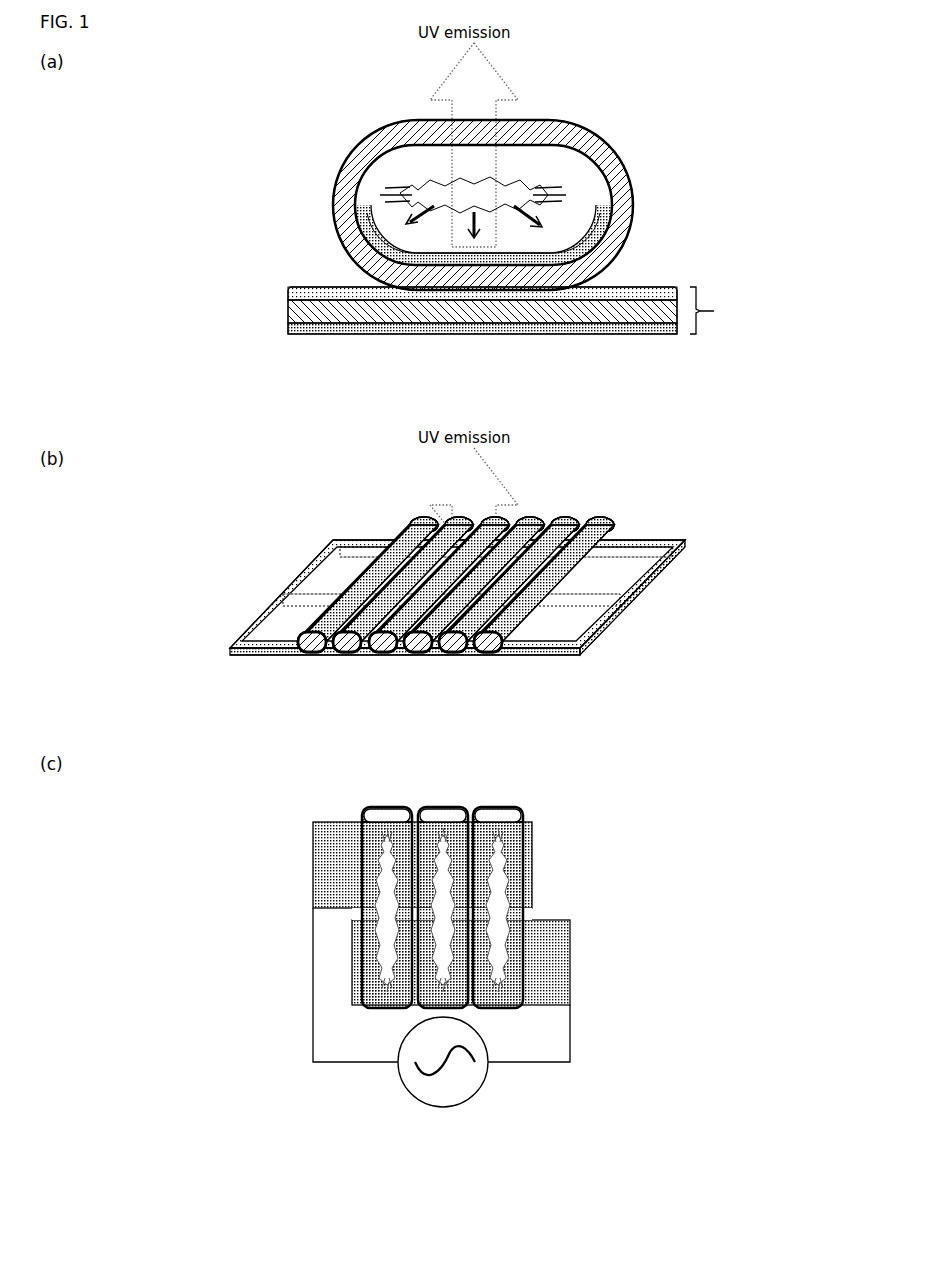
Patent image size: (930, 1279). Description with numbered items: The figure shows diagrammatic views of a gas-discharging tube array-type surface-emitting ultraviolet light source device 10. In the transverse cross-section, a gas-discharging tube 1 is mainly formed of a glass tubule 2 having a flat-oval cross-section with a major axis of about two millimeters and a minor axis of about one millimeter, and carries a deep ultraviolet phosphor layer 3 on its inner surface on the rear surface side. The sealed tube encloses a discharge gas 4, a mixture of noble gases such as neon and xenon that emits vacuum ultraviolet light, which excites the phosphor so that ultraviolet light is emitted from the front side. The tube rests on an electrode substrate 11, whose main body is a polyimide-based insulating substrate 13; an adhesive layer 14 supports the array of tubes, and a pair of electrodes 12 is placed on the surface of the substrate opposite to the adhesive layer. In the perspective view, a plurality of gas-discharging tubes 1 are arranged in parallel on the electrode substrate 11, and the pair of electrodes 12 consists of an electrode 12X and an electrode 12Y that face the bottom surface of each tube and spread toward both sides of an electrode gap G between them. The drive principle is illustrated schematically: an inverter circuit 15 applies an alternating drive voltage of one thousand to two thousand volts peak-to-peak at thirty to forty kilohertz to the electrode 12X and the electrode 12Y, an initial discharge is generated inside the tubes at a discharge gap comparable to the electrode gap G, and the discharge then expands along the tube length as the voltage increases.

In FIG. 1, the gas-discharging tube 1 is at (446, 386).
In FIG. 1, the glass tubule 2 is at (558, 122).
In FIG. 1, the deep ultraviolet phosphor layer 3 is at (367, 253).
In FIG. 1, the discharge gas 4 is at (392, 176).
The gas-discharging array-type surface-emitting ultraviolet light source device 10 is at (325, 517).
The electrode substrate 11 is at (214, 586).
The pair of electrodes 12 is at (355, 335).
The electrode 12X is at (612, 579).
The electrode 12Y is at (583, 625).
The insulating substrate 13 is at (491, 325).
The surface layer 14 is at (651, 287).
The inverter circuit 15 is at (486, 1078).
The electrode gap G is at (312, 598).